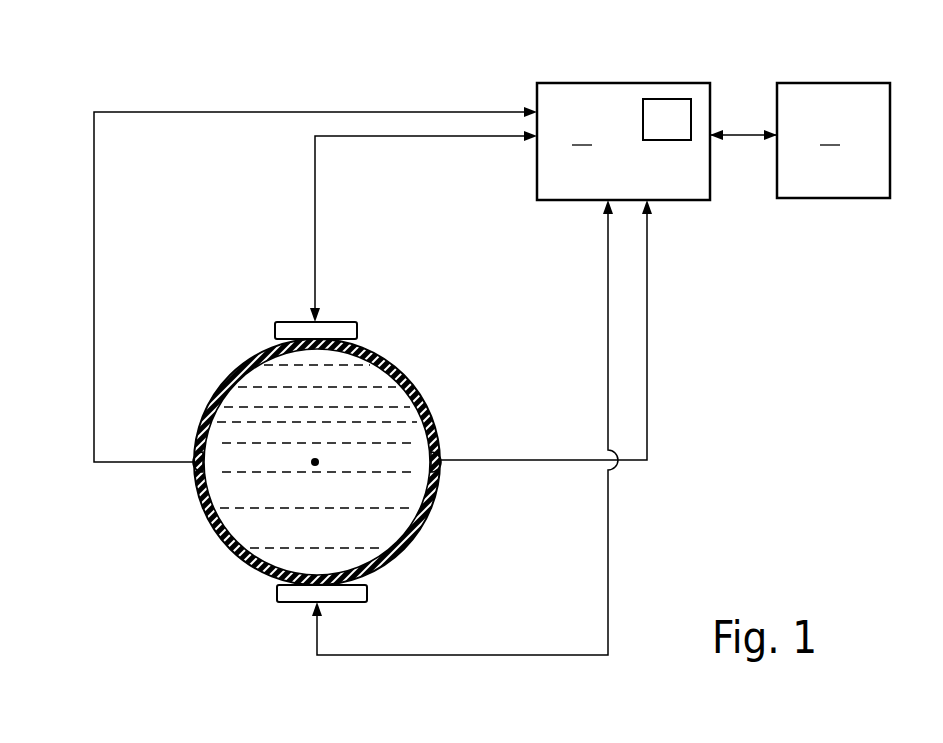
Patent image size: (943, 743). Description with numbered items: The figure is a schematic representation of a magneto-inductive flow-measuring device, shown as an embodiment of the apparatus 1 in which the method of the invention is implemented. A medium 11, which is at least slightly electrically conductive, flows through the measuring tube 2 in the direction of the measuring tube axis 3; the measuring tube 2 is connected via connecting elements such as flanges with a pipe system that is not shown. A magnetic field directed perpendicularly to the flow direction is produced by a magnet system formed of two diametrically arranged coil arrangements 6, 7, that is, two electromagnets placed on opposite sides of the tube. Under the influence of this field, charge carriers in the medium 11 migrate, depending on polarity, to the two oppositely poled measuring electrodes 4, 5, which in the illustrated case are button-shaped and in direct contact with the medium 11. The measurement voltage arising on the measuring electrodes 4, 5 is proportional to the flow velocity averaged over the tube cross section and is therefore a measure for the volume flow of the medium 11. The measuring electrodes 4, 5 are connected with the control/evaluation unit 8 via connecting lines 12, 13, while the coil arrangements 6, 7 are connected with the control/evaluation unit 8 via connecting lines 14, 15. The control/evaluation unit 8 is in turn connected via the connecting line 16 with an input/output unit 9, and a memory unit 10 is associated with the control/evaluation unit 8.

The apparatus 1 is at (185, 584).
The measuring tube 2 is at (198, 428).
The measuring tube axis 3 is at (312, 463).
The measuring electrode 4 is at (440, 457).
The measuring electrode 5 is at (207, 453).
The coil arrangement 6 is at (342, 332).
The coil arrangement 7 is at (297, 603).
The control/evaluation unit 8 is at (623, 141).
The input/output unit 9 is at (833, 140).
The memory unit 10 is at (667, 123).
The medium 11 is at (393, 525).
The connecting line 12 is at (647, 328).
The connecting line 13 is at (93, 305).
The connecting line 14 is at (608, 548).
The connecting line 15 is at (317, 204).
The connecting line 16 is at (745, 132).